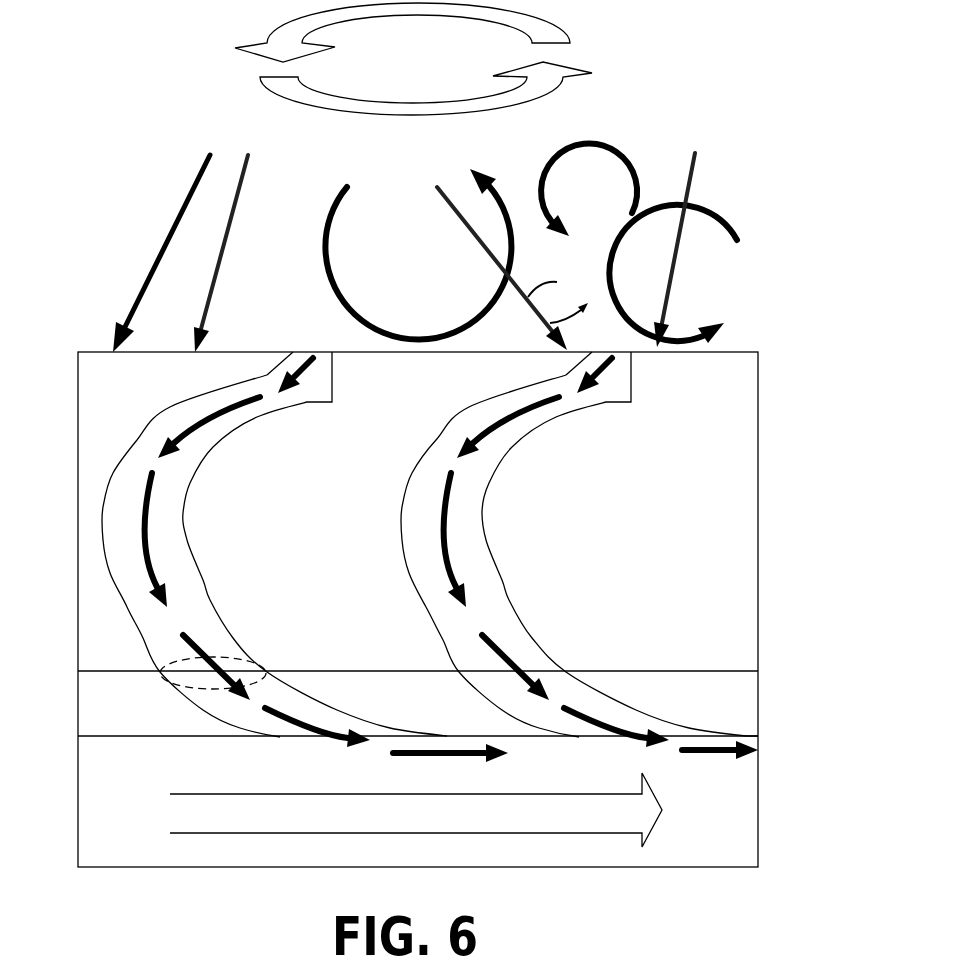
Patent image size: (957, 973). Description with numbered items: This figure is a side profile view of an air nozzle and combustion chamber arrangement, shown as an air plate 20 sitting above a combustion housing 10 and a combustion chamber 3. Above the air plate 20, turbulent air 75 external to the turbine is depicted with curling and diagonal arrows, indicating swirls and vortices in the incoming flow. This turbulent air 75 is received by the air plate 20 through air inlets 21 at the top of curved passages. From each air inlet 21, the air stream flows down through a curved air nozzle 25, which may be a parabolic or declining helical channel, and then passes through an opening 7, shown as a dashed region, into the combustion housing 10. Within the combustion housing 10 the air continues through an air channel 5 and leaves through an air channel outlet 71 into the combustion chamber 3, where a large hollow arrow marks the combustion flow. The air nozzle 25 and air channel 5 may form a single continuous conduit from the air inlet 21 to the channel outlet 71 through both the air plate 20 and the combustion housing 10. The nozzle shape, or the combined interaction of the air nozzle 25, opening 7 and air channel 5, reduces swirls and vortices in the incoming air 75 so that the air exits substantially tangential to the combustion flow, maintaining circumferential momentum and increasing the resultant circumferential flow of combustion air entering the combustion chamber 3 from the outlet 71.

The combustion chamber 3 is at (72, 738).
The air channel 5 is at (195, 708).
The opening 7 is at (222, 655).
The combustion housing 10 is at (418, 709).
The air plate 20 is at (418, 579).
The air inlet 21 is at (317, 350).
The air nozzle 25 is at (190, 533).
The air channel outlet 71 is at (305, 738).
The turbulent air 75 is at (110, 106).